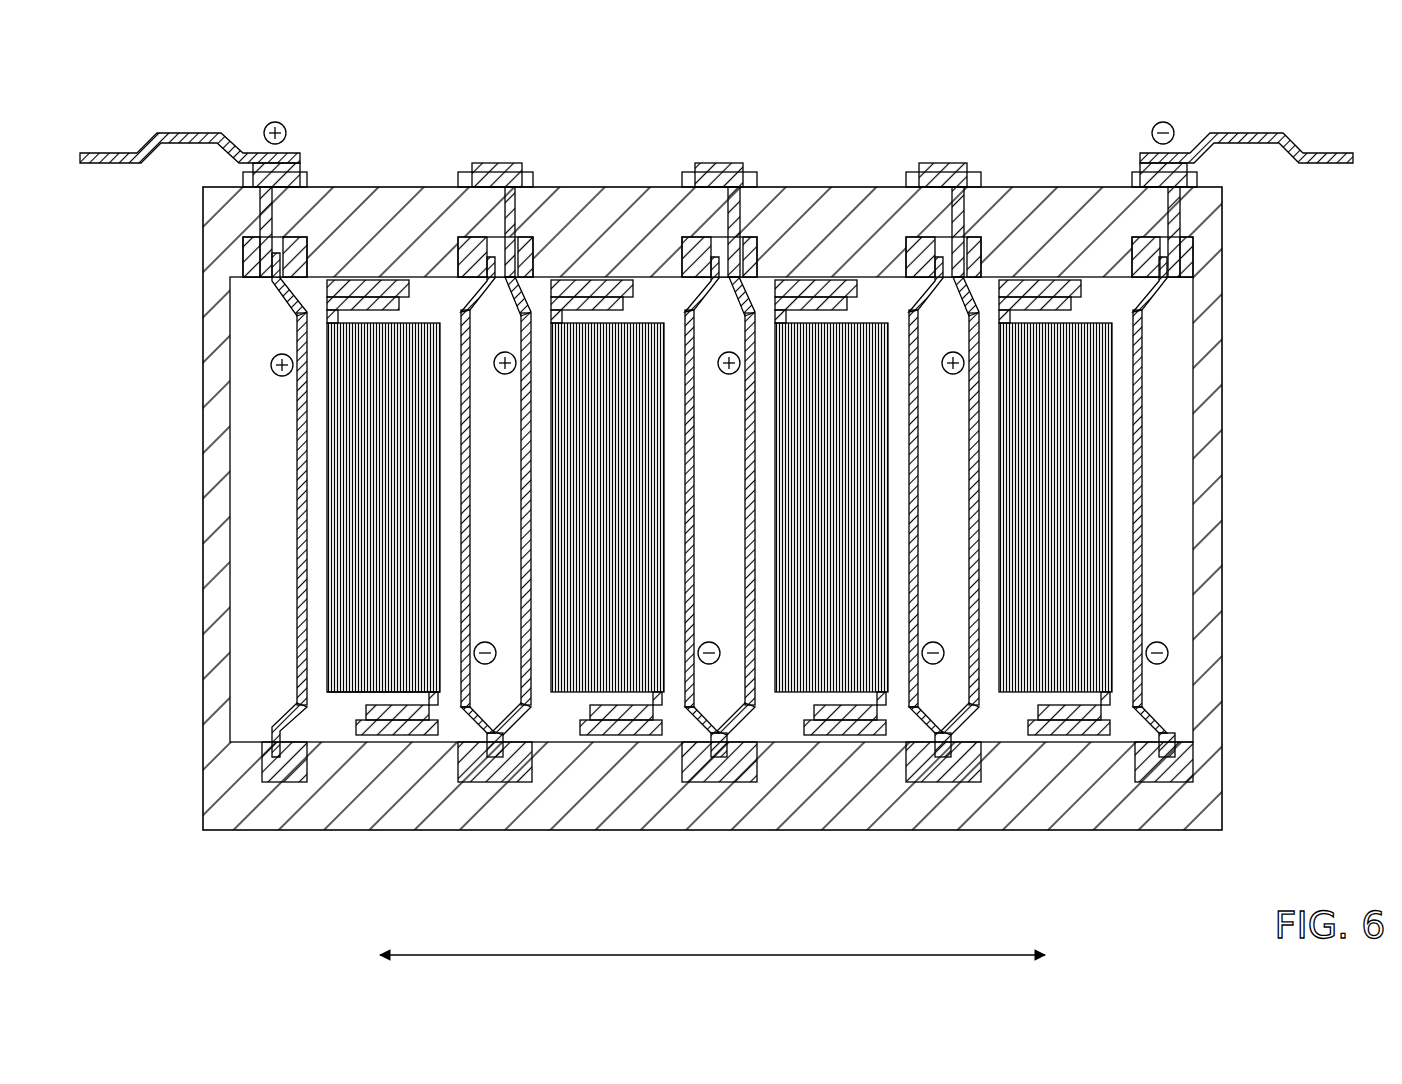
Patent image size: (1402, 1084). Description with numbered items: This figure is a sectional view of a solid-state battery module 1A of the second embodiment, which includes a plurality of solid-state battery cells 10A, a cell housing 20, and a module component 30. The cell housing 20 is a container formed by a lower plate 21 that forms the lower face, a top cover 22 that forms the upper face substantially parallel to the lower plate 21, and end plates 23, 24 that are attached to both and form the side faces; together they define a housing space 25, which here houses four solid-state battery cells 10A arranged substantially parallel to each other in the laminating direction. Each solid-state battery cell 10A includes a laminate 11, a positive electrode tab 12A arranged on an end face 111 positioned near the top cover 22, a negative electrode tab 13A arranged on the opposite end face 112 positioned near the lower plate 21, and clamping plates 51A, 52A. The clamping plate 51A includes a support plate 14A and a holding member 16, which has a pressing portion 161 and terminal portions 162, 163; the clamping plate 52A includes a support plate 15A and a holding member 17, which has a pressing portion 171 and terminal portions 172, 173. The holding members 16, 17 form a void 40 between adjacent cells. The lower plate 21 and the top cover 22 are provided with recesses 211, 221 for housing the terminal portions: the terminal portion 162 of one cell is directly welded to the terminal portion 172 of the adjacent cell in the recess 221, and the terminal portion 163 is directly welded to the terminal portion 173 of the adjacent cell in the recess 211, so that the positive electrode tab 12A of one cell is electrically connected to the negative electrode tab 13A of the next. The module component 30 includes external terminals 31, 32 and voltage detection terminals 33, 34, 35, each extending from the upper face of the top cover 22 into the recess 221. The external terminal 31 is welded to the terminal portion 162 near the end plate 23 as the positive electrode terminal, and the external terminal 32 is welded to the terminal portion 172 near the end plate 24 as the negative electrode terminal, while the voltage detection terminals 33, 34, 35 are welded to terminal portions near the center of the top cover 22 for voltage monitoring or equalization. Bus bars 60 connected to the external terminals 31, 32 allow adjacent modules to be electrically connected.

The solid-state battery module 1A is at (1303, 105).
The solid-state battery cell 10A is at (315, 494).
The laminate 11 is at (359, 510).
The end face 111 is at (420, 328).
The end face 112 is at (340, 702).
The positive electrode tab 12A is at (333, 184).
The negative electrode tab 13A is at (407, 494).
The support plate 14A is at (323, 272).
The support plate 15A is at (385, 737).
The holding member 16 is at (217, 505).
The pressing portion 161 is at (300, 610).
The terminal portion 162 is at (272, 285).
The terminal portion 163 is at (275, 733).
The holding member 17 is at (462, 495).
The pressing portion 171 is at (490, 740).
The terminal portion 172 is at (470, 296).
The terminal portion 173 is at (475, 720).
The cell housing 20 is at (733, 510).
The lower plate 21 is at (790, 822).
The recess 211 is at (280, 770).
The top cover 22 is at (862, 200).
The recess 221 is at (250, 257).
The end plate 23 is at (210, 510).
The end plate 24 is at (1210, 512).
The housing space 25 is at (1175, 440).
The module component 30 is at (719, 170).
The external terminal 31 is at (262, 170).
The external terminal 32 is at (1173, 170).
The voltage detection terminal 33 is at (503, 170).
The voltage detection terminal 34 is at (732, 170).
The voltage detection terminal 35 is at (956, 170).
The void 40 is at (951, 350).
The clamping plate 51A is at (338, 283).
The clamping plate 52A is at (443, 302).
The bus bar 60 is at (190, 130).